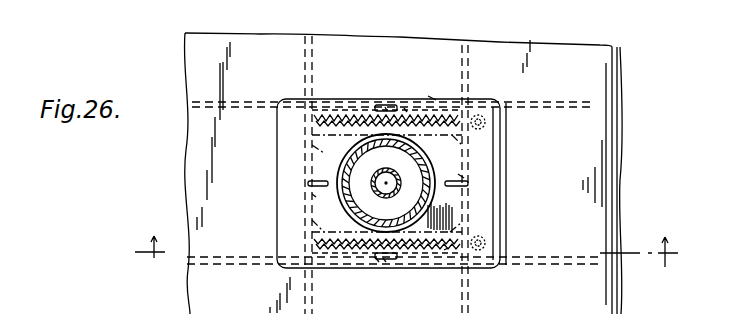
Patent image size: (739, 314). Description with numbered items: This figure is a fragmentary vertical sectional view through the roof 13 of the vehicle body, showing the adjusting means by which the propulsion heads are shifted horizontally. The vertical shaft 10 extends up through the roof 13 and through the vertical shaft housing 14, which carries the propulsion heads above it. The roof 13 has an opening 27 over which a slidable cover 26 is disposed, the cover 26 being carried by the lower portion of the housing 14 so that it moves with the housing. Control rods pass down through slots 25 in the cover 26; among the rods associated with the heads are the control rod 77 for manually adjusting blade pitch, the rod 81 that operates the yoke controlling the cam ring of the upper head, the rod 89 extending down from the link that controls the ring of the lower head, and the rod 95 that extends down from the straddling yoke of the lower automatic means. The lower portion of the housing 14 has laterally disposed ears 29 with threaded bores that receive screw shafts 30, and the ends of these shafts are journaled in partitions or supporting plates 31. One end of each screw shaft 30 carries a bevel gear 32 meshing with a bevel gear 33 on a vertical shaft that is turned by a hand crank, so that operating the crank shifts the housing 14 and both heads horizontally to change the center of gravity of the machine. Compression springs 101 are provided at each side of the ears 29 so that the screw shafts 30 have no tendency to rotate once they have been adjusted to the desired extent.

The roof 13 is at (195, 44).
The slidable cover 26 is at (498, 203).
The opening 27 is at (407, 261).
The vertical shaft 10 is at (397, 173).
The vertical shaft housing 14 is at (369, 216).
The slots 25 is at (374, 107).
The screw shafts 30 is at (339, 115).
The supporting plates 31 is at (310, 214).
The bevel gear 32 is at (476, 116).
The bevel gear 33 is at (484, 112).
The ears 29 is at (405, 110).
The rod 89 is at (388, 112).
The compression springs 101 is at (432, 96).
The rod 95 is at (385, 259).
The control rod 77 is at (313, 196).
The rod 81 is at (462, 175).